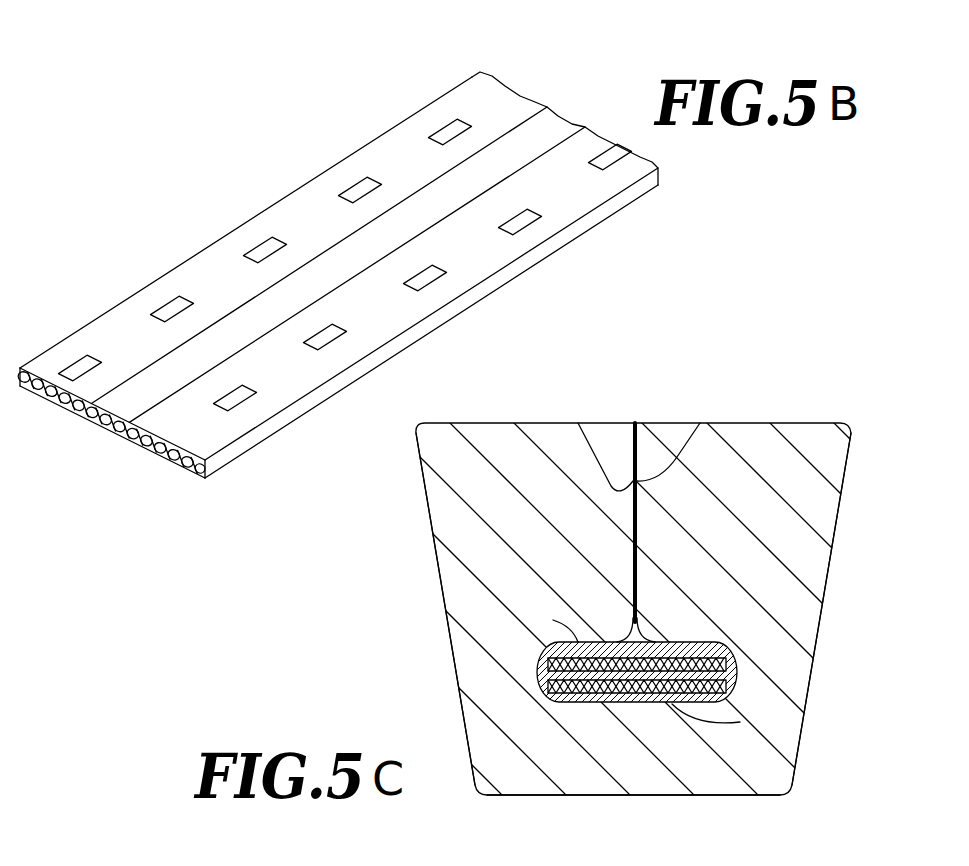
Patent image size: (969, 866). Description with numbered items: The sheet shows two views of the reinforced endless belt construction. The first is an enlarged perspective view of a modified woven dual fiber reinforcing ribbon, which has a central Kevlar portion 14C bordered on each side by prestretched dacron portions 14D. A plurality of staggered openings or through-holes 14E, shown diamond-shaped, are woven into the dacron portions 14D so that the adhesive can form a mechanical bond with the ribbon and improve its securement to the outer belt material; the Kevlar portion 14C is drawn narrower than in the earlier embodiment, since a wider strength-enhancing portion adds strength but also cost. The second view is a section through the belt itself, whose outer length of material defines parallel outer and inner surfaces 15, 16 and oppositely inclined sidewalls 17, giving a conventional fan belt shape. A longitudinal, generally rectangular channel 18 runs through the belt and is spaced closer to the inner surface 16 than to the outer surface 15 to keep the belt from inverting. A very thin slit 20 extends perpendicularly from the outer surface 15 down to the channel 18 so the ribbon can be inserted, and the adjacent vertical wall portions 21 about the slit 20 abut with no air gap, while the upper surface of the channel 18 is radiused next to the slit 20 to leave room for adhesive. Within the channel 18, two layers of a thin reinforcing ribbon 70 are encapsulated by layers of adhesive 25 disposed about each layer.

In FIG. 5B, the central Kevlar portion 14C is at (542, 128).
In FIG. 5B, the prestretched dacron portions 14D is at (472, 95).
In FIG. 5B, the staggered openings or through-holes 14E is at (356, 186).
In FIG. 5C, the outer surface 15 is at (787, 422).
In FIG. 5C, the inner surface 16 is at (622, 795).
In FIG. 5C, the oppositely inclined sidewalls 17 is at (838, 507).
In FIG. 5C, the longitudinal generally rectangular channel 18 is at (664, 627).
In FIG. 5C, the slit 20 is at (630, 423).
In FIG. 5C, the adjacent vertical wall portions 21 is at (559, 427).
In FIG. 5C, the adhesive 25 is at (553, 620).
In FIG. 5C, the reinforcing ribbon 70 is at (737, 678).